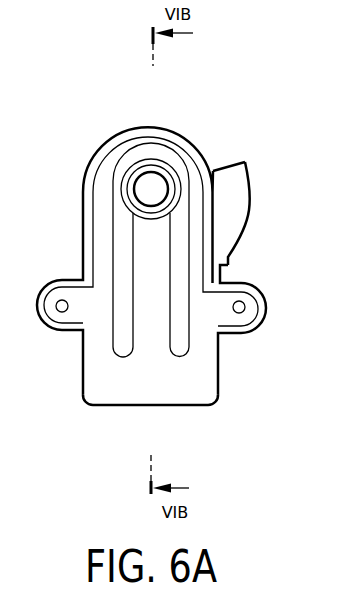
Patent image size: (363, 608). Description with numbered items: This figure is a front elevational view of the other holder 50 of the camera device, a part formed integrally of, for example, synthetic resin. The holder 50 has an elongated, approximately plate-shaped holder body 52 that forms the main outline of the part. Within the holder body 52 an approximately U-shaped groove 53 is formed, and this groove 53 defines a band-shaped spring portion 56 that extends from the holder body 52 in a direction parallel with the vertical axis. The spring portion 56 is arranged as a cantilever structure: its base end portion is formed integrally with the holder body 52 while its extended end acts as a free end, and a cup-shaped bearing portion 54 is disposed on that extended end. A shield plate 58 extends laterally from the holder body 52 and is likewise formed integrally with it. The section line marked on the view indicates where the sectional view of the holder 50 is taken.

The nozzle holder / body 50 is at (192, 115).
The bottom wall 52 is at (140, 403).
The slot 53 is at (121, 335).
The boss with through hole 54 is at (139, 170).
The central rib 56 is at (143, 255).
The side tab 58 is at (243, 183).